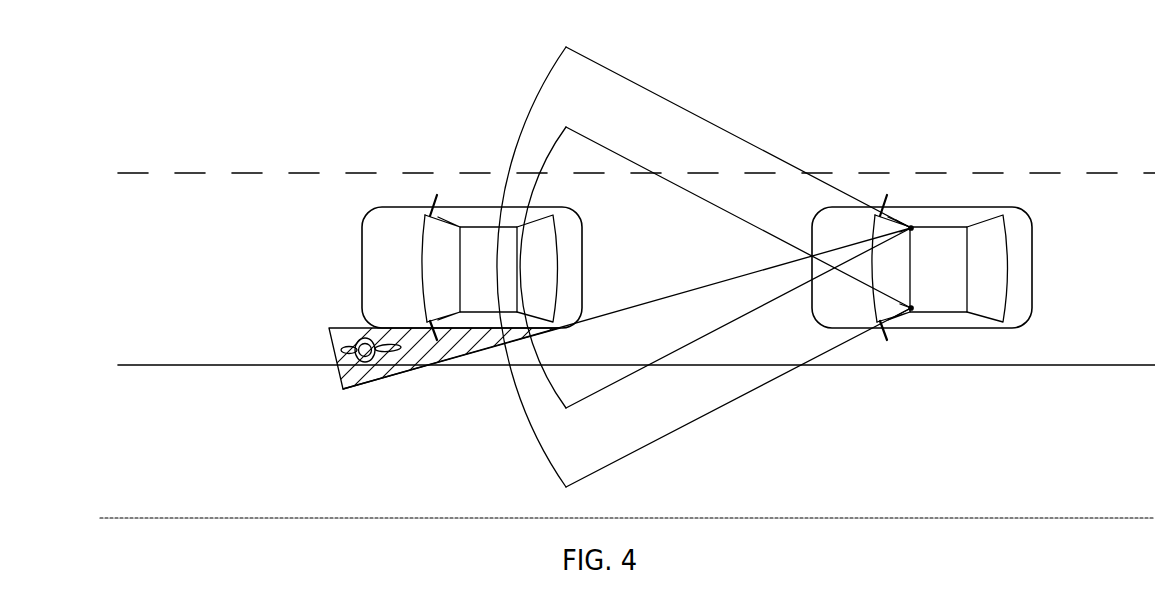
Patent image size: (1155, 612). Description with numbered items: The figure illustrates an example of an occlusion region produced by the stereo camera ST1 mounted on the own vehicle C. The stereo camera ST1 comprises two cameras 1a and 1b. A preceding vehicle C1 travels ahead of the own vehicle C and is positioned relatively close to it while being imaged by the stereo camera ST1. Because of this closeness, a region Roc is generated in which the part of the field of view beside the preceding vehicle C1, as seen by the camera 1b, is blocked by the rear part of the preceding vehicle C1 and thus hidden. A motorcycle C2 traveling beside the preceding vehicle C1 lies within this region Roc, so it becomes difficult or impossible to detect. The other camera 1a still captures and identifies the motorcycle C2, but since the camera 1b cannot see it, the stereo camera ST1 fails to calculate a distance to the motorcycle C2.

The own vehicle C is at (1033, 270).
The preceding vehicle C1 is at (363, 271).
The motorcycle C2 is at (335, 350).
The camera 1a is at (913, 311).
The camera 1b is at (914, 225).
The region Roc is at (412, 352).
The stereo camera ST1 is at (940, 213).